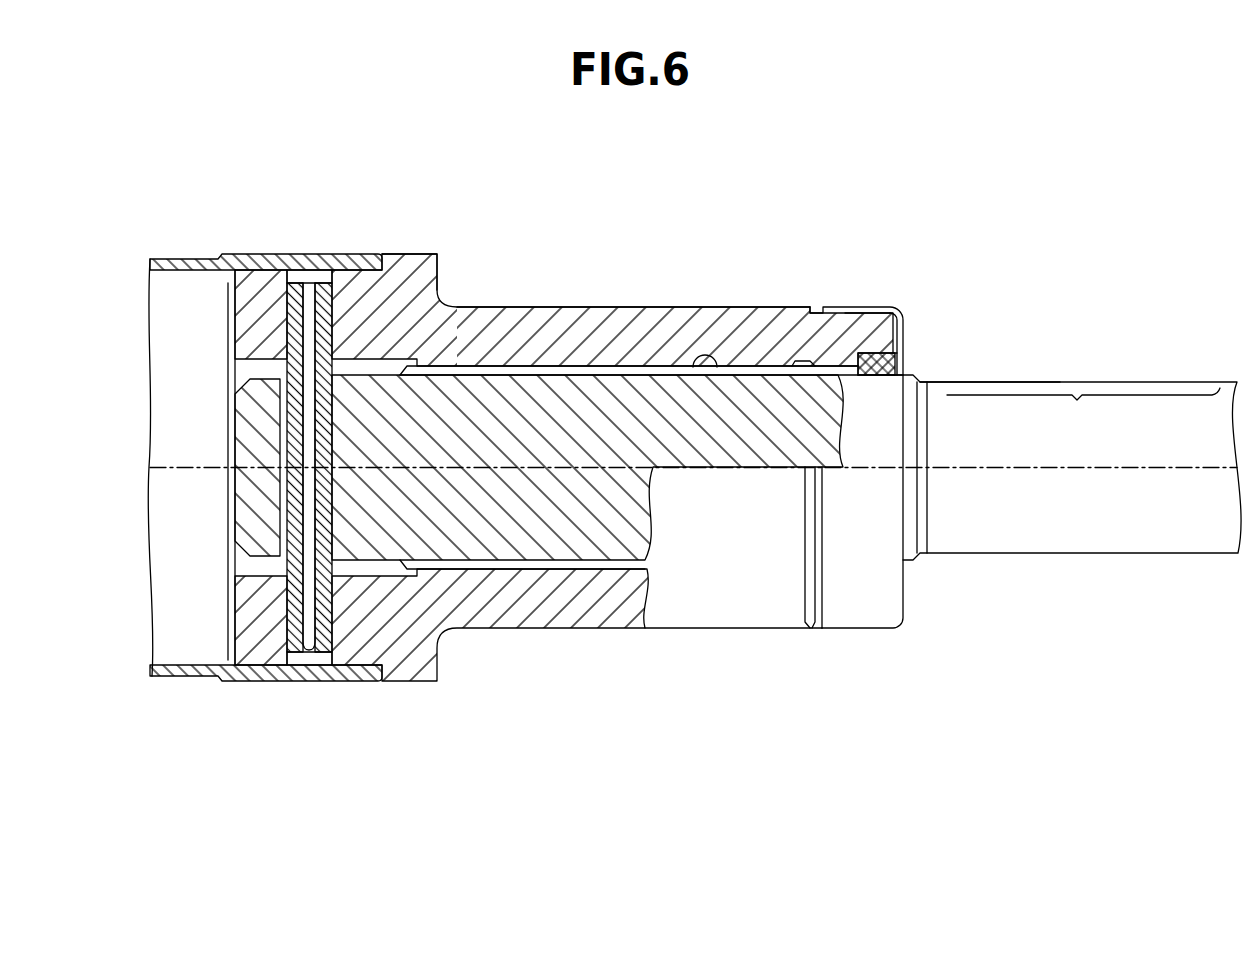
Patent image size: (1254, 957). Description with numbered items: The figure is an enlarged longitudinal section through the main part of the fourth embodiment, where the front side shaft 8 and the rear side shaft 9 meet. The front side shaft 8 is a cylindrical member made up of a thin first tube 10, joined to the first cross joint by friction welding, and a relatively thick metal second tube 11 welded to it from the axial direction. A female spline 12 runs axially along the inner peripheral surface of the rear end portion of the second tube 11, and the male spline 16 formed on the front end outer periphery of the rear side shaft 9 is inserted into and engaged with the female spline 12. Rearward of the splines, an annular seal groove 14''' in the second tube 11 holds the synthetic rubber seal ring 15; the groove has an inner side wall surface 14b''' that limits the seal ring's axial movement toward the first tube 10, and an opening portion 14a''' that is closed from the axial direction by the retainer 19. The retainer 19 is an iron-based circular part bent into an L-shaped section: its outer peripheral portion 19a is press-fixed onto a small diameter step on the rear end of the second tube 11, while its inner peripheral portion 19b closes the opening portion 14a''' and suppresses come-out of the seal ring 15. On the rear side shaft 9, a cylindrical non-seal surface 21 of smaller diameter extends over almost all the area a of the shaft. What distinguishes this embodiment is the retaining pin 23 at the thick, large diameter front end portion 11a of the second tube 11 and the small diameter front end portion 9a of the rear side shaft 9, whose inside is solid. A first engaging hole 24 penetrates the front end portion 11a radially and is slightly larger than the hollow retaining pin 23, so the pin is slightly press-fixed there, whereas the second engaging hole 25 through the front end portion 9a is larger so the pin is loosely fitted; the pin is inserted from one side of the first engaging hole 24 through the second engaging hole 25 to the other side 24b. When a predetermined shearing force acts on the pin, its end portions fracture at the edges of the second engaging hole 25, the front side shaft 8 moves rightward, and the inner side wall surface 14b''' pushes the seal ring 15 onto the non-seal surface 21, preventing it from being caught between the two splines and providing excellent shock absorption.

The front side shaft 8 is at (716, 307).
The rear side shaft 9 is at (1150, 381).
The front end portion of the rear side shaft 9a is at (247, 492).
The first tube 10 is at (190, 268).
The second tube 11 is at (520, 306).
The front end portion of the second tube 11a is at (353, 302).
The female spline 12 is at (617, 378).
The annular seal groove 14''' is at (854, 300).
The opening portion of the annular seal groove 14a''' is at (952, 336).
The inner side wall surface of the annular seal groove 14b''' is at (877, 415).
The seal ring 15 is at (882, 377).
The male spline 16 is at (716, 352).
The retainer 19 is at (860, 631).
The outer peripheral portion of the retainer 19a is at (867, 307).
The inner peripheral portion of the retainer 19b is at (905, 322).
The non-seal surface 21 is at (1047, 380).
The retaining pin 23 is at (322, 275).
The first engaging hole 24 is at (288, 272).
The other side of the first engaging hole 24b is at (312, 652).
The second engaging hole 25 is at (320, 417).
The almost all area of the rear side shaft a is at (1083, 409).